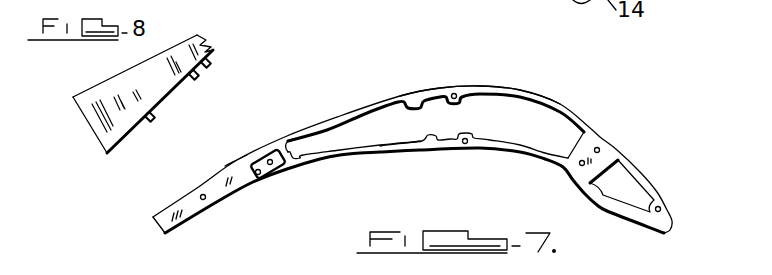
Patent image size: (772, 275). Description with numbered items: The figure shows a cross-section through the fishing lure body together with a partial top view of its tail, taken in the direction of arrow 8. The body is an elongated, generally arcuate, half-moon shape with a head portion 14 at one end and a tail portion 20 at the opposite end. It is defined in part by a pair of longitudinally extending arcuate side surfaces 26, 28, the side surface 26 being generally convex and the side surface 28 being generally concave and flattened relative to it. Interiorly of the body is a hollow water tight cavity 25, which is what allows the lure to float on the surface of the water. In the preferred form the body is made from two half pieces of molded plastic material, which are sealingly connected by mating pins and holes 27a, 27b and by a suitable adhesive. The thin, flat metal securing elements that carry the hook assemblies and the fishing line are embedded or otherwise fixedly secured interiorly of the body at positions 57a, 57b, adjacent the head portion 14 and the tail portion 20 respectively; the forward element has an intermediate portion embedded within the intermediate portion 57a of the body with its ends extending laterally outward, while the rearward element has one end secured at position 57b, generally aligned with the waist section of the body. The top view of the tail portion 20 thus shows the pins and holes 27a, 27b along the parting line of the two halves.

In FIG. 7, the arrow 8 is at (236, 160).
In FIG. 7, the head portion 14 is at (653, 183).
In FIG. 7, the tail portion 20 is at (203, 182).
In FIG. 7, the water tight cavity 25 is at (368, 110).
In FIG. 7, the side surface 26 is at (487, 89).
In FIG. 8, the pin 27a is at (210, 68).
In FIG. 7, the hole 27b is at (255, 183).
In FIG. 7, the side surface 28 is at (476, 151).
In FIG. 7, the intermediate portion 57a is at (607, 148).
In FIG. 7, the position 57b is at (265, 186).